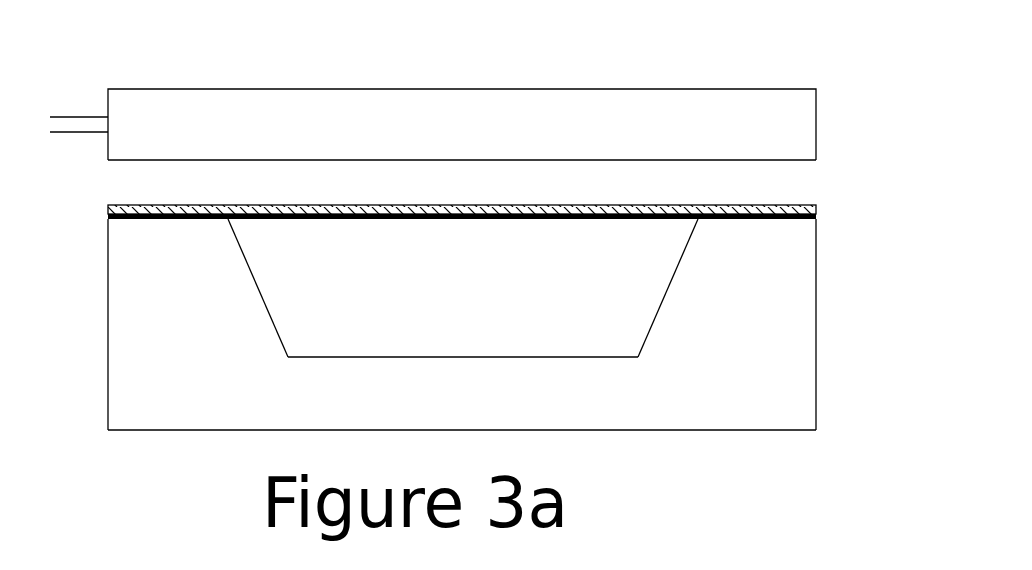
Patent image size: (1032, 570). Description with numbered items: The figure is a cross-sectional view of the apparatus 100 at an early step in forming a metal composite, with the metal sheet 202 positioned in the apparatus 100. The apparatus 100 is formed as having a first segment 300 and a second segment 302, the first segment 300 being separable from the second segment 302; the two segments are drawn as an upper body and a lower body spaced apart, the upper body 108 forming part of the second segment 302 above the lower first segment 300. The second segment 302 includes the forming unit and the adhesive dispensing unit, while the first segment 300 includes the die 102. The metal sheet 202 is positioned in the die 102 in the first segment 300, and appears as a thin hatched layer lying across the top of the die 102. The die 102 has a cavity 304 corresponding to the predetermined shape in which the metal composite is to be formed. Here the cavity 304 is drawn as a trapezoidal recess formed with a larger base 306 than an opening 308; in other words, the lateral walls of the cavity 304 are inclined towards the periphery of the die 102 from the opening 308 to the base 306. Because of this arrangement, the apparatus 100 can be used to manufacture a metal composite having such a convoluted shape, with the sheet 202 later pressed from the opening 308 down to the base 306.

The apparatus 100 is at (478, 255).
The cap / lid body 108 is at (473, 90).
The second segment 302 is at (792, 135).
The metal sheet 202 is at (793, 205).
The first segment 300 is at (507, 336).
The cavity 304 is at (439, 264).
The base 306 is at (492, 302).
The opening 308 is at (286, 237).
The die 102 is at (697, 431).